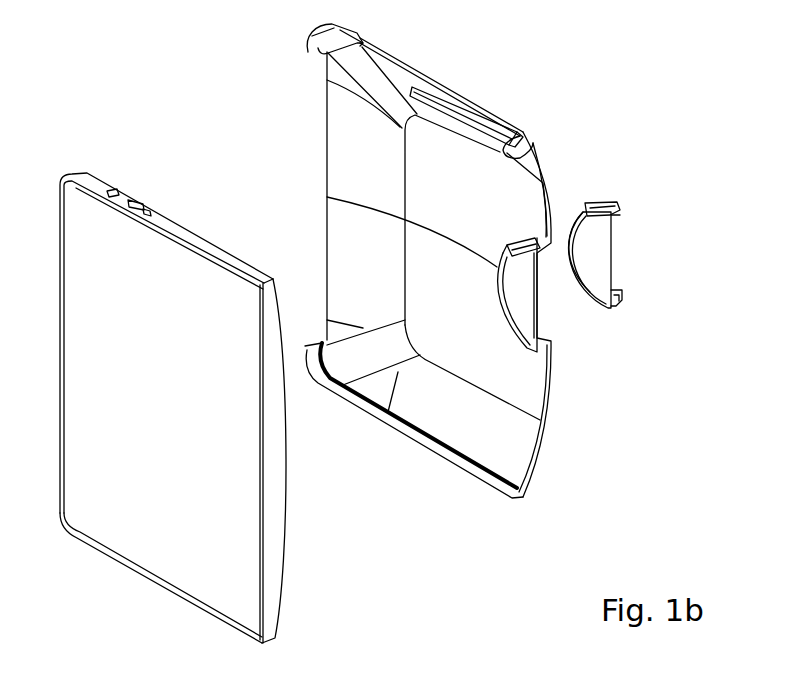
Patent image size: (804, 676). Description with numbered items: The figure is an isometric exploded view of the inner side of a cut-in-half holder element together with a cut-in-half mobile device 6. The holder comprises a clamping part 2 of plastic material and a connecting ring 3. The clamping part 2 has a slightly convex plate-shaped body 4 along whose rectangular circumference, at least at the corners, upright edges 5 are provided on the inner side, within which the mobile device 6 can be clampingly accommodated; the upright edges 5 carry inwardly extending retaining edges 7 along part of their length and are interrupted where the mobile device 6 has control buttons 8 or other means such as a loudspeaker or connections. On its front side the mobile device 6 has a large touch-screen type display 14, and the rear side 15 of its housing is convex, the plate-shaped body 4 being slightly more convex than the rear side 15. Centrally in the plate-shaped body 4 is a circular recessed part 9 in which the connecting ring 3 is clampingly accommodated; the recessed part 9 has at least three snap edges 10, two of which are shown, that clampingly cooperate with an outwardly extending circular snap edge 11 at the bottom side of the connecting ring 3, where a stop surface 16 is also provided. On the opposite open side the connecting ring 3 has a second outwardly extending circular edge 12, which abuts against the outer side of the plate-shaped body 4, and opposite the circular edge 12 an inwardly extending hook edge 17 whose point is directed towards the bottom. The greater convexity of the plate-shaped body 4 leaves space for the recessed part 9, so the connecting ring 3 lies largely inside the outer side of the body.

The clamping part 2 is at (290, 177).
The connecting ring 3 is at (680, 243).
The plate-shaped body 4 is at (440, 278).
The upright edges 5 is at (307, 47).
The mobile device 6 is at (352, 535).
The side wall 7 is at (537, 153).
The control buttons 8 is at (158, 213).
The recessed part 9 is at (545, 303).
The snap edges 10 is at (520, 237).
The snap edge 11 is at (575, 213).
The second outwardly extending circular edge 12 is at (617, 203).
The display 14 is at (174, 405).
The rear side 15 is at (285, 440).
The stop surface 16 is at (610, 257).
The hook edge 17 is at (620, 218).